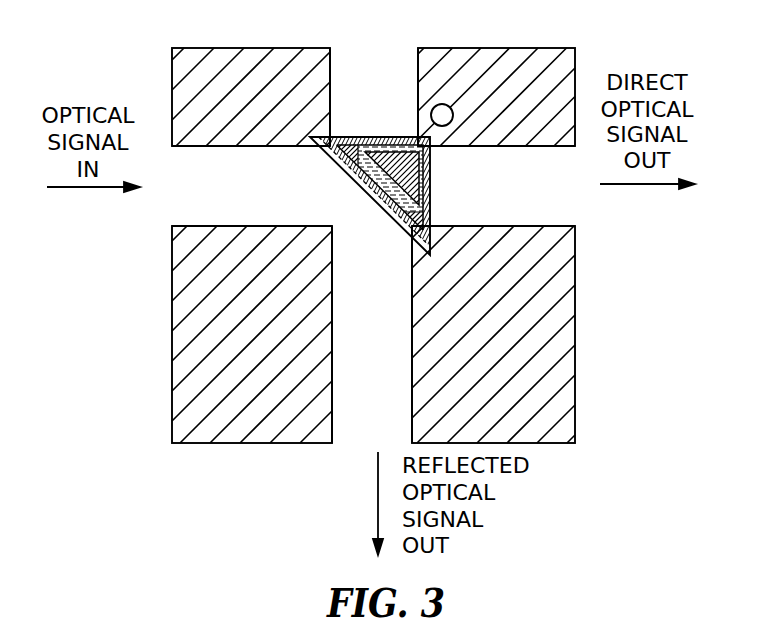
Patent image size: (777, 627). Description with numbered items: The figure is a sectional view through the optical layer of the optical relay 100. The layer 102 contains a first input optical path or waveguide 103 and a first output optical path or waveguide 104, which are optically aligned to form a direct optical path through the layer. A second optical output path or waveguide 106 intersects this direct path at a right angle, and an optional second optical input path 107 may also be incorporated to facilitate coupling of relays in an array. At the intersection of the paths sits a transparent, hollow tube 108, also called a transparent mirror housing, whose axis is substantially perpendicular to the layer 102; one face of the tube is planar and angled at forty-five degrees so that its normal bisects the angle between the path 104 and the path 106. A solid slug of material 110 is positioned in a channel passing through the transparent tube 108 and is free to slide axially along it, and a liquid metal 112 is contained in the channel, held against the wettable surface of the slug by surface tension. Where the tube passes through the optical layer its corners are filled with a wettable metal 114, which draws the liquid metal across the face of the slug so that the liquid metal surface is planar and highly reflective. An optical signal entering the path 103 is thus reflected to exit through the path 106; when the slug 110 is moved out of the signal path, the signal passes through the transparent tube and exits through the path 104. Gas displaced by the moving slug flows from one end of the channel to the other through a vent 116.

The optical relay 100 is at (117, 402).
The layer 102 is at (180, 282).
The first input optical path 103 is at (182, 210).
The first output optical path 104 is at (563, 212).
The second optical output path 106 is at (368, 444).
The second optical input path 107 is at (368, 62).
The transparent hollow tube 108 is at (370, 193).
The solid slug 110 is at (403, 162).
The liquid metal 112 is at (358, 175).
The wettable metal 114 is at (336, 142).
The vent 116 is at (436, 104).